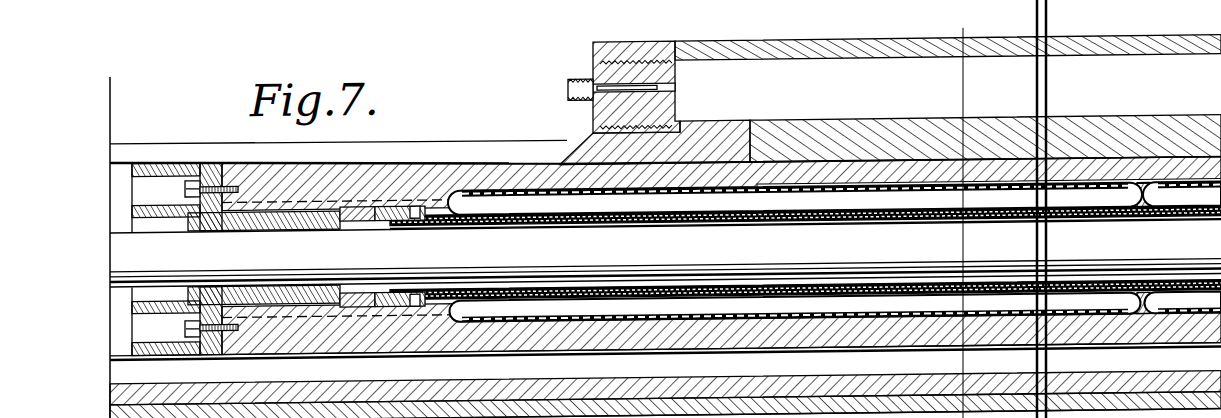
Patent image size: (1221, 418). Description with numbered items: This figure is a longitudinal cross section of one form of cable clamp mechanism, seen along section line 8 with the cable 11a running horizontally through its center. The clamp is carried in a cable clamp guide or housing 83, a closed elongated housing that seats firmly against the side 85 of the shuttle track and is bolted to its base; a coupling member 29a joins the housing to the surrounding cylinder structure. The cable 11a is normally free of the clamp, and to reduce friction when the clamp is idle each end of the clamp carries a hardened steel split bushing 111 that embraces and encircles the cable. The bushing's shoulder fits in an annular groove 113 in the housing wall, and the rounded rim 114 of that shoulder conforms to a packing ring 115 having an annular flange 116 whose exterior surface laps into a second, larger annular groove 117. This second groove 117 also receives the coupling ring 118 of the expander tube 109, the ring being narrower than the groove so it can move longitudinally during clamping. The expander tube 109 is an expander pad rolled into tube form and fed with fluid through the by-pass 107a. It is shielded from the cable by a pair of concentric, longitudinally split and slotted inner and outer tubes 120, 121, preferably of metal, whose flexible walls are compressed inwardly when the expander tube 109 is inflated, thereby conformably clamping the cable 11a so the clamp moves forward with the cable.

The section line 8- 8 is at (948, 32).
The cable 11a is at (665, 241).
The coupling nut 29a is at (567, 150).
The cable clamp guide or housing 83 is at (340, 177).
The side of the track 85 is at (303, 306).
The by-pass 107a is at (760, 197).
The expander tube 109 is at (890, 190).
The split bushing 111 is at (300, 224).
The annular groove 113 is at (383, 287).
The rim of the shoulder 114 is at (337, 221).
The packing ring 115 is at (380, 219).
The annular flange 116 is at (415, 308).
The second annular groove 117 is at (438, 226).
The coupling ring 118 is at (347, 304).
The inner slotted tube 120 is at (447, 203).
The outer slotted tube 121 is at (513, 217).